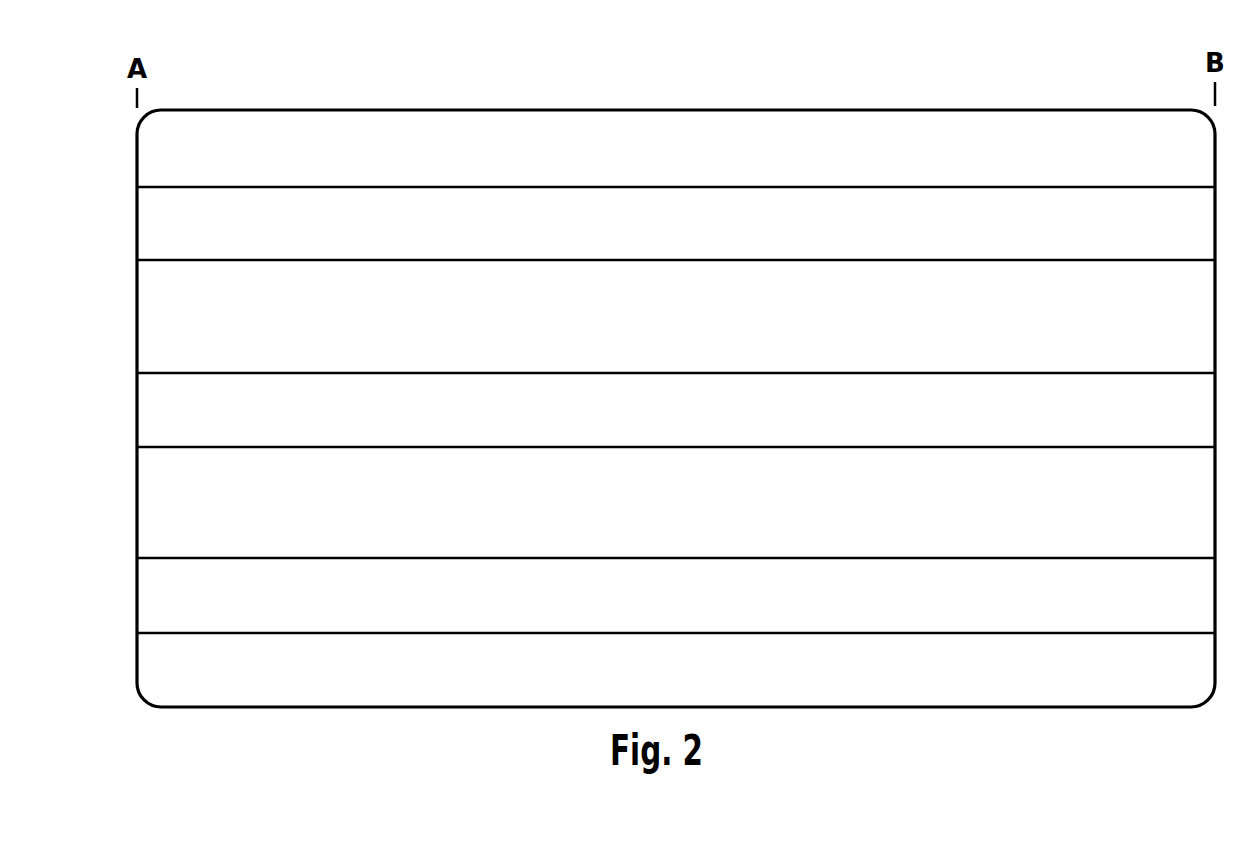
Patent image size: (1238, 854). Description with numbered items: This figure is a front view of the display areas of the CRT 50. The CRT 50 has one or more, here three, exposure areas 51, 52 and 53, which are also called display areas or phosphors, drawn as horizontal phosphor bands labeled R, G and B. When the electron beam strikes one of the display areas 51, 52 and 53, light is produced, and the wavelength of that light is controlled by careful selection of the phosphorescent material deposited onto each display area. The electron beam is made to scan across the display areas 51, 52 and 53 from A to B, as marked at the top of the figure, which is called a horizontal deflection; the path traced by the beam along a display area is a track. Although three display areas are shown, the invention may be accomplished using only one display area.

The CRT 50 is at (988, 108).
The exposure area 51 is at (990, 238).
The exposure area 52 is at (991, 421).
The exposure area 53 is at (983, 606).